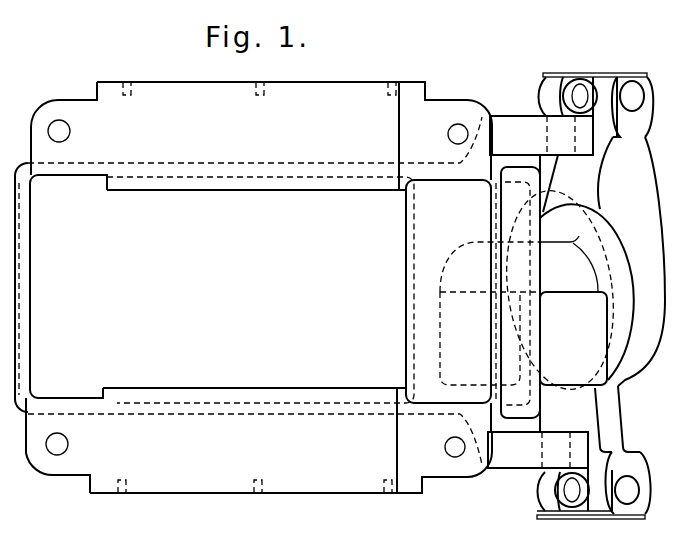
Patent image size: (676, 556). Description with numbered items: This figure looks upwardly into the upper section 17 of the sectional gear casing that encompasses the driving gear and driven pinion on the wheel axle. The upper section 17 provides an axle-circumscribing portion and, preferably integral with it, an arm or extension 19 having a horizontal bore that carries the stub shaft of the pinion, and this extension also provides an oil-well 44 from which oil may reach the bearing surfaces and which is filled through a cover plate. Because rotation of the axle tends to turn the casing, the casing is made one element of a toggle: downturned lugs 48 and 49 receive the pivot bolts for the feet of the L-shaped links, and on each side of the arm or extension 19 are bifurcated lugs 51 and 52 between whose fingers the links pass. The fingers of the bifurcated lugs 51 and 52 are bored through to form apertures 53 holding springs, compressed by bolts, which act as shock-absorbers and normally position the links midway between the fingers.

The upper section of the gear casing 17 is at (259, 287).
The arm or extension 19 is at (571, 283).
The oil-well 44 is at (573, 338).
The downturned lug 48 is at (538, 450).
The downturned lug 49 is at (541, 135).
The bifurcated lug 51 is at (601, 419).
The bifurcated lug 52 is at (584, 104).
The apertures 53 is at (615, 490).